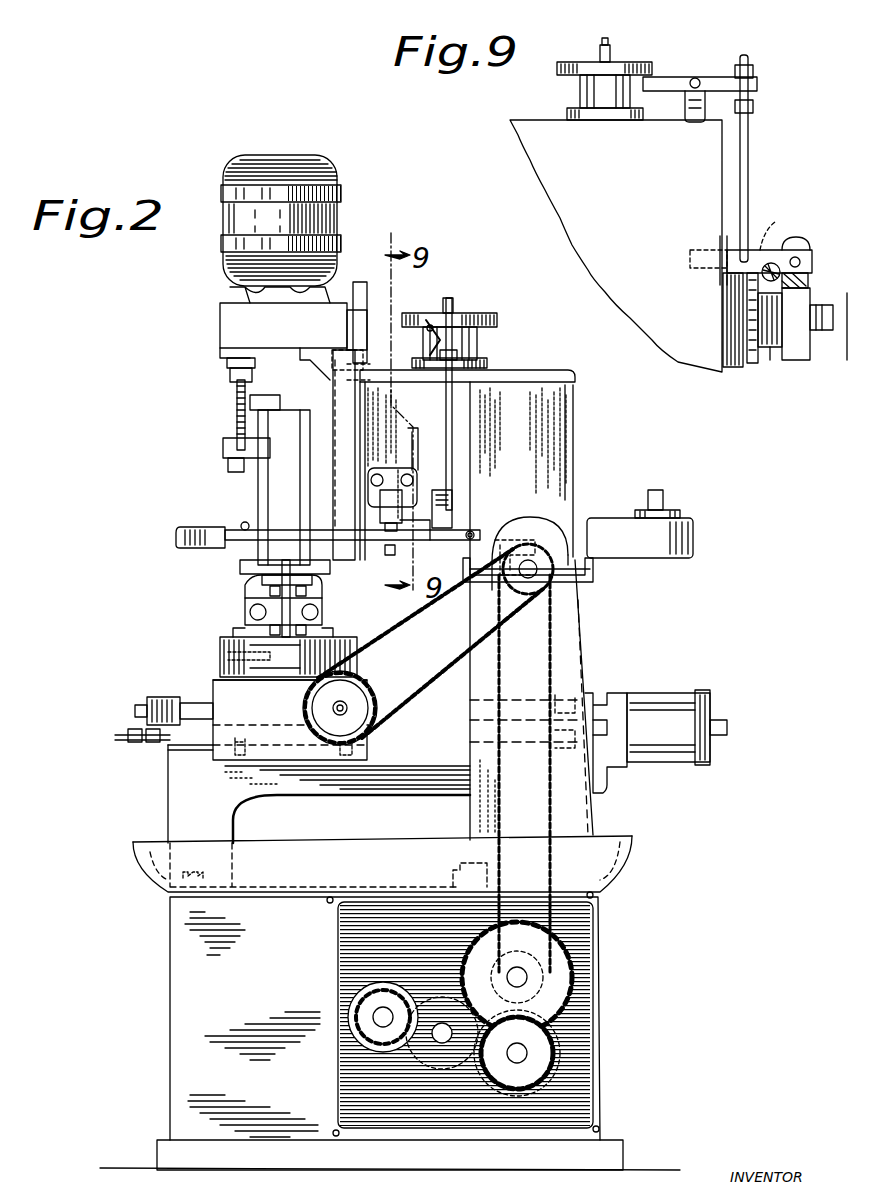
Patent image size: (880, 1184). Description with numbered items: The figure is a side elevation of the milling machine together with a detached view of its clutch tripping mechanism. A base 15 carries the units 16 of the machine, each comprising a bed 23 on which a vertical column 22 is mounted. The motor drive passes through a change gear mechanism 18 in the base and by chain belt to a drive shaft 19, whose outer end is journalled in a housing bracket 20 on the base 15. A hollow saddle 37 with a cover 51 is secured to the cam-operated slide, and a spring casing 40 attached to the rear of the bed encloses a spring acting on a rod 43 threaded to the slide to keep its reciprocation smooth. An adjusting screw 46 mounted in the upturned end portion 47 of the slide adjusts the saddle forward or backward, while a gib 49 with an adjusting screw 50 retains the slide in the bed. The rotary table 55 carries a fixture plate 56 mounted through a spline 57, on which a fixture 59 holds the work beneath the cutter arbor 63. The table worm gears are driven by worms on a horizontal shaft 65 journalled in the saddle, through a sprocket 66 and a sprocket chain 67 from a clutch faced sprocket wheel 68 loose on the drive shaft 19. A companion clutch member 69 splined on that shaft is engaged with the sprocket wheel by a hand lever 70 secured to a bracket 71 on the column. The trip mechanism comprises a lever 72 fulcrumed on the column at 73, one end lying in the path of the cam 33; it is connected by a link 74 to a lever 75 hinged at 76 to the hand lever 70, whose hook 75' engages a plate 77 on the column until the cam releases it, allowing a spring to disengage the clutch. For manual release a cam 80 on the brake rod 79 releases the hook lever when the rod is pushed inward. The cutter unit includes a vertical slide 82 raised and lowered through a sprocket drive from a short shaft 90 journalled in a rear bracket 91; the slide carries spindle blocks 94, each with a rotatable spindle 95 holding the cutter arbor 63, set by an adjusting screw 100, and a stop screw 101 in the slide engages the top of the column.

In FIG. 2, the base 15 is at (382, 1003).
In FIG. 2, the unit 16 is at (575, 458).
In FIG. 2, the change gear mechanism 18 is at (415, 1075).
In FIG. 2, the drive shaft 19 is at (540, 572).
In FIG. 9, the drive shaft 19 is at (828, 330).
In FIG. 2, the housing bracket 20 is at (524, 775).
In FIG. 2, the column 22 is at (467, 475).
In FIG. 9, the column 22 is at (616, 246).
In FIG. 2, the bed 23 is at (385, 782).
In FIG. 2, the cam 33 is at (470, 315).
In FIG. 9, the cam 33 is at (583, 62).
In FIG. 2, the saddle 37 is at (275, 738).
In FIG. 2, the spring casing 40 is at (672, 692).
In FIG. 2, the rod 43 is at (598, 700).
In FIG. 2, the adjusting screw 46 is at (136, 707).
In FIG. 2, the end portion of the slide 47 is at (160, 697).
In FIG. 2, the gib 49 is at (135, 745).
In FIG. 2, the adjusting screw 50 is at (118, 736).
In FIG. 2, the cover 51 is at (285, 676).
In FIG. 2, the rotary table 55 is at (220, 650).
In FIG. 2, the fixture plate 56 is at (250, 640).
In FIG. 2, the spline 57 is at (232, 656).
In FIG. 2, the fixture 59 is at (252, 606).
In FIG. 2, the cutter arbor 63 is at (270, 580).
In FIG. 2, the horizontal shaft 65 is at (333, 708).
In FIG. 2, the sprocket 66 is at (378, 722).
In FIG. 2, the sprocket chain 67 is at (446, 662).
In FIG. 2, the clutch faced sprocket wheel 68 is at (555, 528).
In FIG. 9, the clutch member 69 is at (770, 350).
In FIG. 2, the hand lever 70 is at (395, 545).
In FIG. 9, the hand lever 70 is at (808, 282).
In FIG. 2, the bracket 71 is at (408, 490).
In FIG. 2, the lever 72 is at (460, 330).
In FIG. 9, the lever 72 is at (672, 77).
In FIG. 2, the fulcrum 73 is at (455, 338).
In FIG. 9, the fulcrum 73 is at (700, 78).
In FIG. 2, the link 74 is at (446, 415).
In FIG. 9, the link 74 is at (748, 155).
In FIG. 2, the lever 75 is at (464, 509).
In FIG. 9, the lever 75 is at (766, 250).
In FIG. 9, the hook 75' is at (688, 269).
In FIG. 2, the hinge 76 is at (474, 530).
In FIG. 9, the hinge 76 is at (800, 250).
In FIG. 9, the plate 77 is at (727, 275).
In FIG. 2, the brake rod 79 is at (244, 535).
In FIG. 9, the brake rod 79 is at (763, 276).
In FIG. 2, the cam 80 is at (420, 545).
In FIG. 9, the cam 80 is at (763, 224).
In FIG. 2, the vertical slide 82 is at (412, 445).
In FIG. 2, the short shaft 90 is at (656, 494).
In FIG. 2, the bracket 91 is at (640, 534).
In FIG. 2, the spindle block 94 is at (258, 492).
In FIG. 2, the spindle 95 is at (232, 382).
In FIG. 2, the adjusting screw 100 is at (237, 410).
In FIG. 2, the stop screw 101 is at (362, 280).